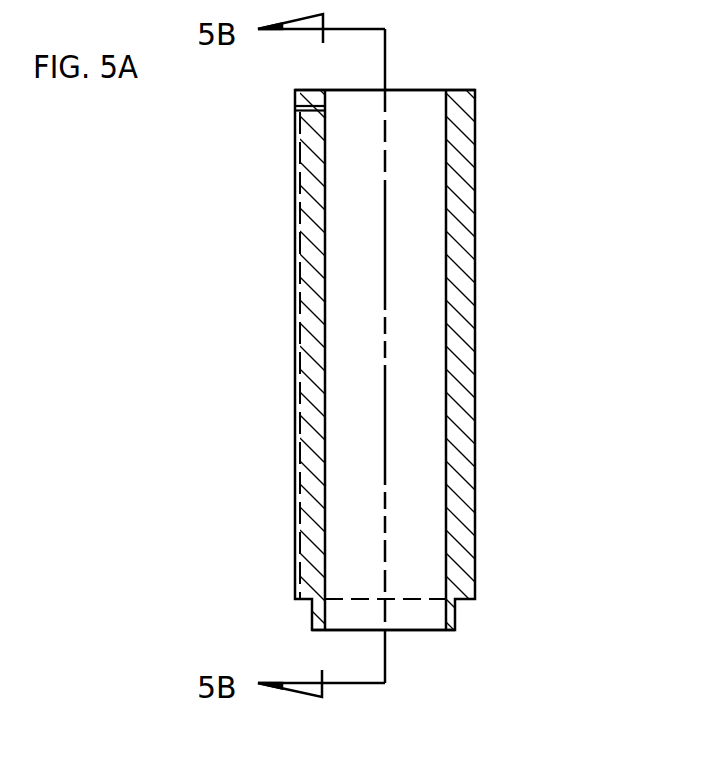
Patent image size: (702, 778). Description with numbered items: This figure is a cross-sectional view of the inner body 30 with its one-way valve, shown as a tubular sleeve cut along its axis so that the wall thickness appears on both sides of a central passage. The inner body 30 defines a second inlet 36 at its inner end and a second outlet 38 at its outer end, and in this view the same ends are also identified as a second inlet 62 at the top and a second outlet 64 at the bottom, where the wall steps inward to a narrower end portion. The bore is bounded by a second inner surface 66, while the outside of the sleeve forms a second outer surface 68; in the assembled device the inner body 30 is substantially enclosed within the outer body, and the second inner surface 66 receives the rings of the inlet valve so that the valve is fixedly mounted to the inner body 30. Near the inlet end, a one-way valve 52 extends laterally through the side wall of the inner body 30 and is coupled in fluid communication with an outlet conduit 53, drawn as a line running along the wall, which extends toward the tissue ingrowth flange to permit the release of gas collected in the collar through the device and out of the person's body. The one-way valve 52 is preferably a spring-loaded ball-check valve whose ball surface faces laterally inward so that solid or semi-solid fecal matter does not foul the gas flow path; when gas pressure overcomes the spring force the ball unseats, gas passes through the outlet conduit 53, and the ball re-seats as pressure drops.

The inner body 30 is at (226, 372).
The second inlet 36 is at (362, 103).
The second outlet 38 is at (344, 622).
The one-way valve 52 is at (303, 113).
The outlet conduit 53 is at (300, 384).
The second inlet 62 is at (410, 89).
The second outlet 64 is at (431, 632).
The second inner surface 66 is at (446, 456).
The second outer surface 68 is at (475, 507).